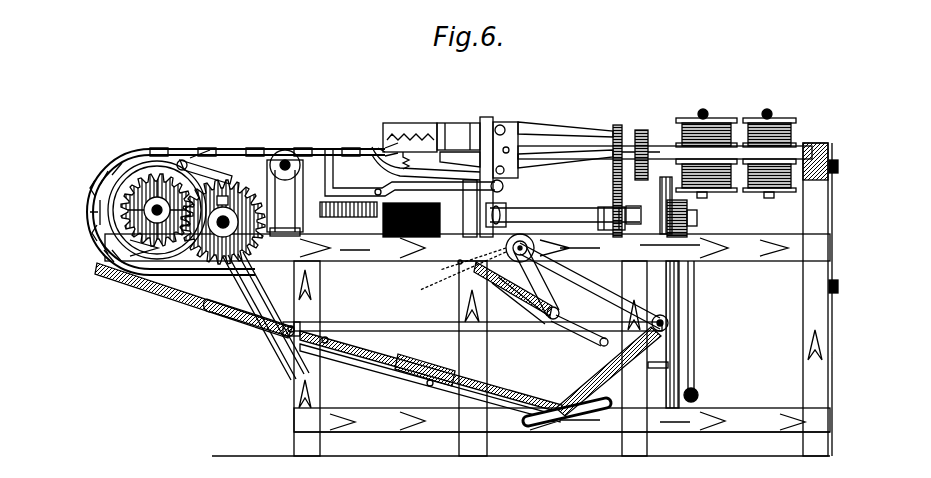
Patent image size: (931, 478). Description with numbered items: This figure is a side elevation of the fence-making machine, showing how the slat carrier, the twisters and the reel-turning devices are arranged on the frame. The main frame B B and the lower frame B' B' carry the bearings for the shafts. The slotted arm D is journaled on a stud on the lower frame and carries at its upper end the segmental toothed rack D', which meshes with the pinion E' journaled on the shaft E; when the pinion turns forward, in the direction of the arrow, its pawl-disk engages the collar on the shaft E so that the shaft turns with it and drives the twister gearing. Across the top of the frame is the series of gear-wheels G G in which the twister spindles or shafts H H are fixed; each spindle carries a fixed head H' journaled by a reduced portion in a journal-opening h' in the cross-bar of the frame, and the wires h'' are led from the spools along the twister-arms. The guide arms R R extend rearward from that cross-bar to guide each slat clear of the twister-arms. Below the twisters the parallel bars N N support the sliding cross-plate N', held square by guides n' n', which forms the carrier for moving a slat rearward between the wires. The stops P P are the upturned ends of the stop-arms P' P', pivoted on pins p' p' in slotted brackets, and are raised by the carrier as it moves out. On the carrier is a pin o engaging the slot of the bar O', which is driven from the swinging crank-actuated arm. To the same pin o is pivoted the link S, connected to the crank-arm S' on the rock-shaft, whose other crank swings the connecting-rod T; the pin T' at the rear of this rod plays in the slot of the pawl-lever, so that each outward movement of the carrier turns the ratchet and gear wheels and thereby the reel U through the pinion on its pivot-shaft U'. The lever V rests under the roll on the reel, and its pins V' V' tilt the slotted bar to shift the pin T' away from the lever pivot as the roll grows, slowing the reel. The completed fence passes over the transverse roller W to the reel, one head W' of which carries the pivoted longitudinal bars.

The main frame B is at (467, 258).
The lower frame B' is at (521, 432).
The transverse roller W is at (244, 193).
The reel head W' is at (83, 201).
The reel U is at (156, 199).
The pivot-shaft U' is at (96, 269).
The parallel bars N is at (294, 196).
The idler pulley F is at (293, 193).
The bolt or pin T' is at (266, 316).
The connecting-rod T is at (478, 316).
The lever V is at (370, 364).
The pins V' is at (391, 370).
The crank-arm S' is at (536, 282).
The bar O' is at (521, 300).
The link S is at (558, 337).
The pivot bolt or pin o is at (440, 272).
The segmental toothed rack D' is at (665, 334).
The slotted arm D is at (658, 374).
The magnet box M is at (400, 128).
The arms R is at (452, 123).
The stop-arms P' is at (414, 173).
The pivot-pins p' is at (516, 189).
The guides n' is at (420, 220).
The cross-plate N' is at (383, 245).
The stops P is at (464, 202).
The heads H' is at (627, 142).
The journal-opening / ears h' is at (520, 118).
The twister spindles or shafts H is at (666, 126).
The gear-wheels G is at (622, 128).
The coil terminal h'' is at (744, 107).
The shaft E is at (597, 232).
The pinion E' is at (682, 210).